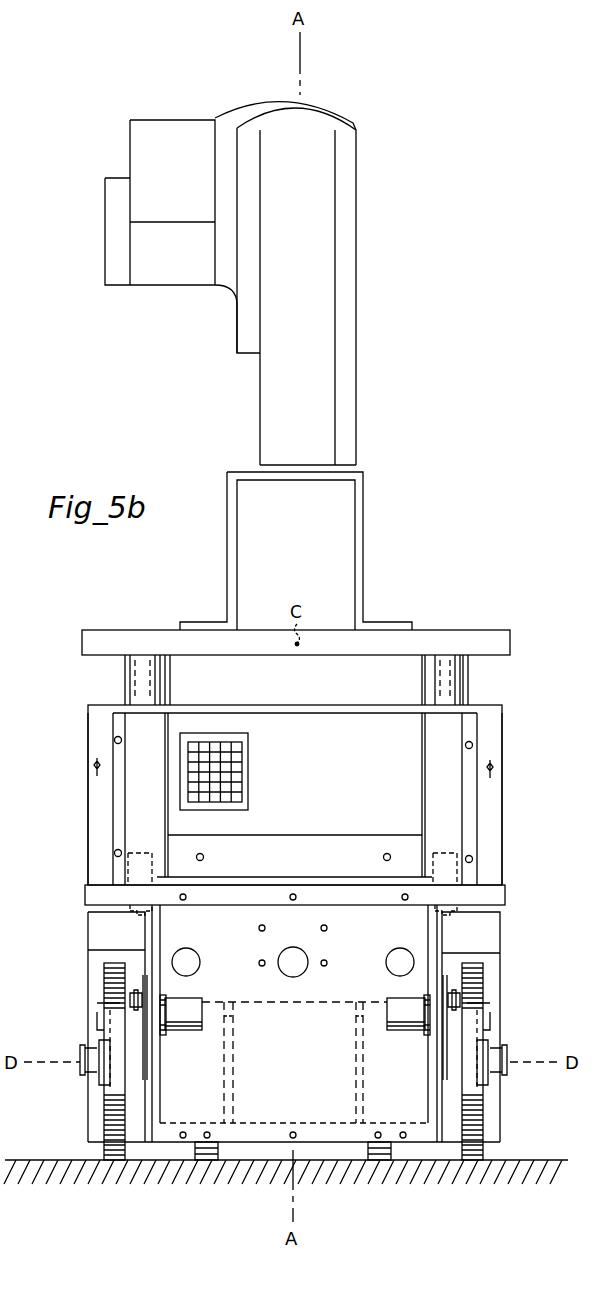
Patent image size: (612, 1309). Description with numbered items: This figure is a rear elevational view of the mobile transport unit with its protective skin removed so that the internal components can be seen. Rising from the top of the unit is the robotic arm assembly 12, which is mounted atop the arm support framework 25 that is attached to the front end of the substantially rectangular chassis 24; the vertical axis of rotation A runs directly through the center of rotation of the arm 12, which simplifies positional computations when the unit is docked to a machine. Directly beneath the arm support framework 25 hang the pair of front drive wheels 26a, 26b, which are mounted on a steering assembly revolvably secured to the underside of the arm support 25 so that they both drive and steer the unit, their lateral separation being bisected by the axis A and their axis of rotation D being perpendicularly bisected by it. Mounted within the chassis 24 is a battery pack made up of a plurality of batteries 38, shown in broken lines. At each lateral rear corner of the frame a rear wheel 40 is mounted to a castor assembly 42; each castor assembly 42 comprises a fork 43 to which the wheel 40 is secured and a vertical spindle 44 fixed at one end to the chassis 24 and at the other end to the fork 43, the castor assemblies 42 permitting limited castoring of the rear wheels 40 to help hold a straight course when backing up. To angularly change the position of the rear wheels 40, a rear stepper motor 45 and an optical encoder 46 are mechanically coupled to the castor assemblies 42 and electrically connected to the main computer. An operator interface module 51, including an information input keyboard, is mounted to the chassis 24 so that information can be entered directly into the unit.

The robotic arm assembly 12 is at (357, 416).
The arm support framework 25 is at (511, 641).
The chassis 24 is at (503, 768).
The operator interface module 51 is at (248, 768).
The vertical spindle 44 is at (88, 835).
The rear stepper motor 45 is at (142, 853).
The castor assembly 42 is at (82, 905).
The fork 43 is at (88, 1003).
The rear wheel 40 is at (113, 1163).
The optical encoder 46 is at (202, 999).
The battery 38 is at (199, 1084).
The front drive wheel 26a is at (206, 1163).
The front drive wheel 26b is at (379, 1163).